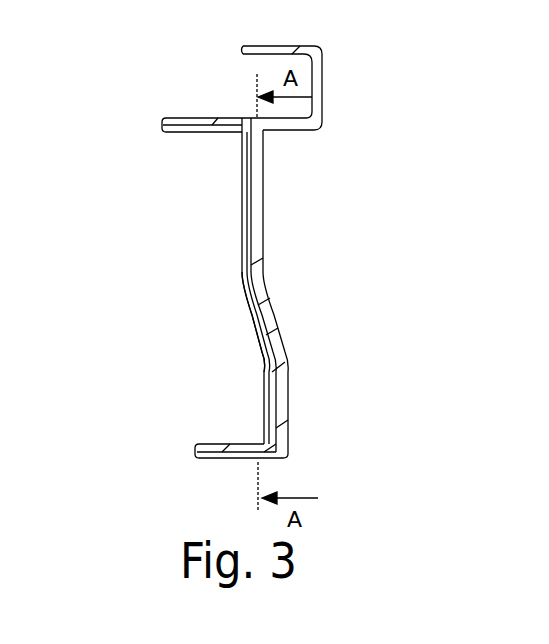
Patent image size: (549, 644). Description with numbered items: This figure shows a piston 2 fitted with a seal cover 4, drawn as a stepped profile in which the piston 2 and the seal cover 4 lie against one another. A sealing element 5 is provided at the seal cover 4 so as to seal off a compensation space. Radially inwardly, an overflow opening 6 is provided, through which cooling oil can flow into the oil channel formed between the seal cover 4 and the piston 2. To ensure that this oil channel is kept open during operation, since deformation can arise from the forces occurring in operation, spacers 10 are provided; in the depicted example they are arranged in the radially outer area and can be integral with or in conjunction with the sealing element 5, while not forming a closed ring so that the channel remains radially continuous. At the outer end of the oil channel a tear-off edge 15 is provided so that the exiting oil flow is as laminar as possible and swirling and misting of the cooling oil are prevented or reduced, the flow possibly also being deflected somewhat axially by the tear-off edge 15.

The piston 2 is at (318, 126).
The seal cover 4 is at (245, 285).
The sealing element 5 is at (165, 118).
The overflow opening 6 is at (263, 442).
The spacers 10 is at (252, 216).
The tear-off edge 15 is at (253, 120).